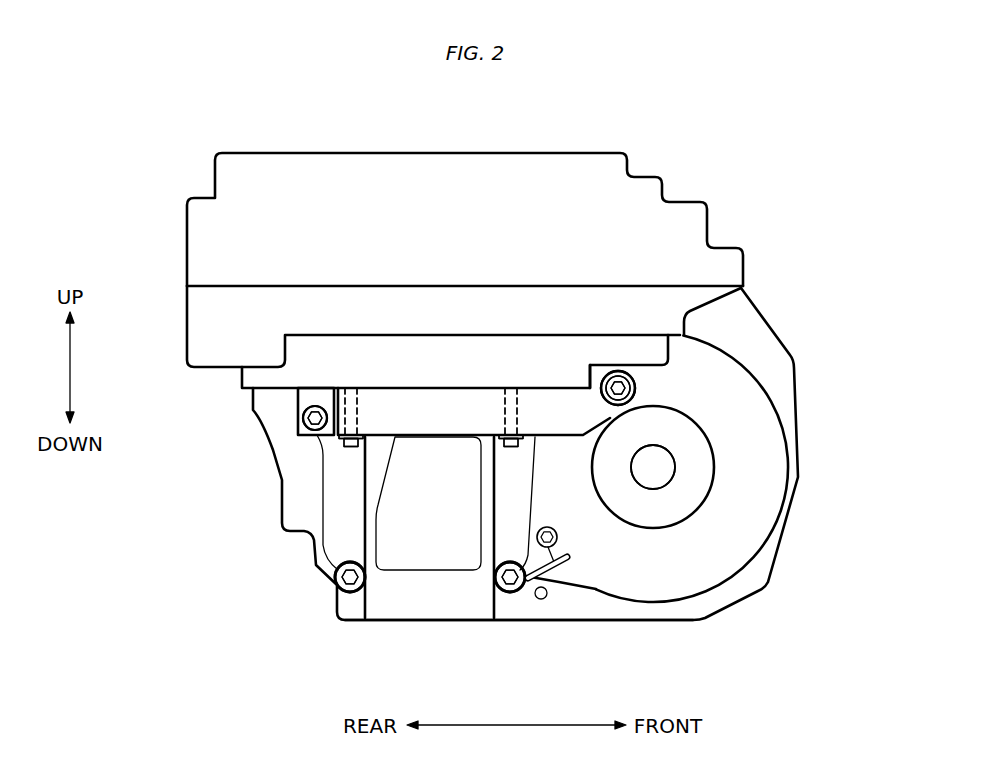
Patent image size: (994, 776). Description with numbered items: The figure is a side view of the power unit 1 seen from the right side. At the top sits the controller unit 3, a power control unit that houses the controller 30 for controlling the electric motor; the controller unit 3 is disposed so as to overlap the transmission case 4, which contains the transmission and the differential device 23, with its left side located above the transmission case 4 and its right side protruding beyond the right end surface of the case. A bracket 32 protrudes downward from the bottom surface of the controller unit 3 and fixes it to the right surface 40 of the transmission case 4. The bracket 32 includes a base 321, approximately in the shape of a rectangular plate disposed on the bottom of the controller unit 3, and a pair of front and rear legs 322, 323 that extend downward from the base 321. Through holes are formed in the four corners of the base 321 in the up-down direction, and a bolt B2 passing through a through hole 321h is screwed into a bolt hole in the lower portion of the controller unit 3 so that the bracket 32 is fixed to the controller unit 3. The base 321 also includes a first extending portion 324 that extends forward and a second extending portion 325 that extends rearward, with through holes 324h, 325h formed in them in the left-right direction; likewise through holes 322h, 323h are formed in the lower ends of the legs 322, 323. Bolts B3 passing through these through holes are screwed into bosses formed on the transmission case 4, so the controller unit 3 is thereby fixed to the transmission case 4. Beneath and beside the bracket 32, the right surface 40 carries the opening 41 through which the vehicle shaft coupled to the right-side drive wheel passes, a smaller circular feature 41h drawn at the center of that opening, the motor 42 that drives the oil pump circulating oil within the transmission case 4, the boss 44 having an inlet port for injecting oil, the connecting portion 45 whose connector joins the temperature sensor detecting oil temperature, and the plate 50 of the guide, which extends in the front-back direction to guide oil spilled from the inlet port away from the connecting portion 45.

The power unit 1 is at (752, 132).
The controller unit 3 is at (592, 168).
The controller 30 is at (453, 188).
The bracket 32 is at (315, 505).
The base 321 is at (432, 398).
The through hole 321h is at (353, 388).
The rear leg 322 is at (338, 532).
The through hole 322h is at (338, 573).
The front leg 323 is at (523, 495).
The through hole 323h is at (497, 588).
The first extending portion 324 is at (577, 402).
The through hole 324h is at (643, 388).
The second extending portion 325 is at (317, 397).
The through hole 325h is at (303, 418).
The transmission case 4 is at (733, 592).
The right surface 40 is at (377, 600).
The opening 41 is at (662, 457).
The output shaft hole 41h is at (663, 473).
The motor 42 is at (405, 558).
The boss 44 is at (565, 542).
The connecting portion 45 is at (548, 597).
The plate 50 is at (565, 573).
The differential device 23 is at (743, 405).
The bolt B2 is at (347, 447).
The bolt B3 is at (302, 424).